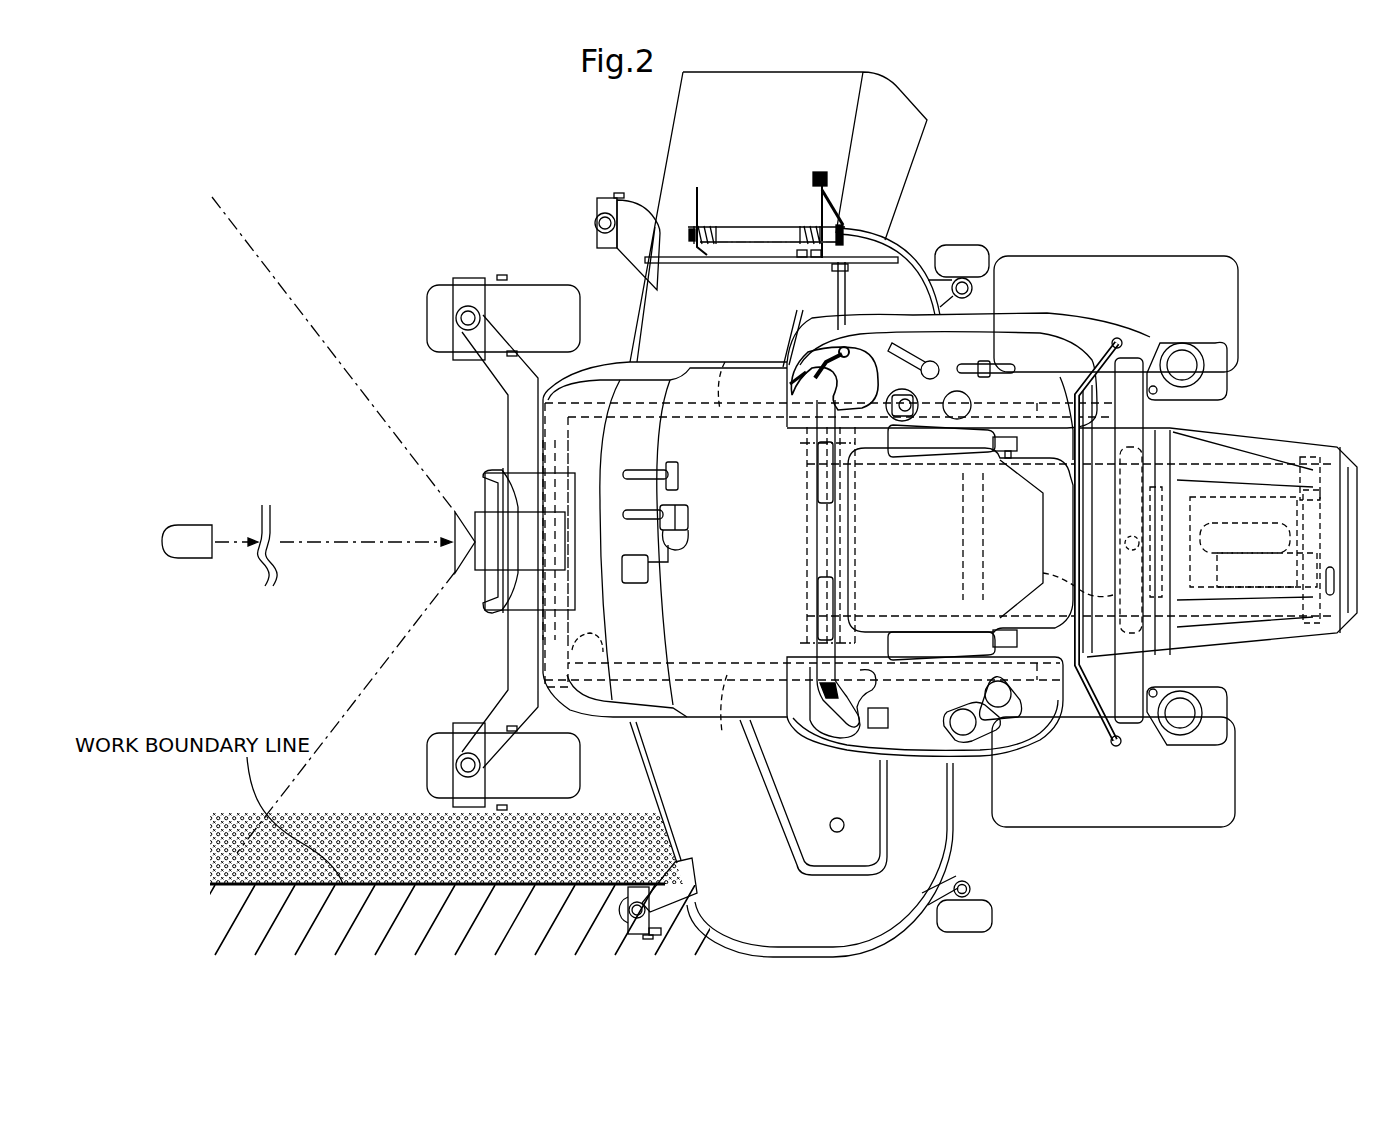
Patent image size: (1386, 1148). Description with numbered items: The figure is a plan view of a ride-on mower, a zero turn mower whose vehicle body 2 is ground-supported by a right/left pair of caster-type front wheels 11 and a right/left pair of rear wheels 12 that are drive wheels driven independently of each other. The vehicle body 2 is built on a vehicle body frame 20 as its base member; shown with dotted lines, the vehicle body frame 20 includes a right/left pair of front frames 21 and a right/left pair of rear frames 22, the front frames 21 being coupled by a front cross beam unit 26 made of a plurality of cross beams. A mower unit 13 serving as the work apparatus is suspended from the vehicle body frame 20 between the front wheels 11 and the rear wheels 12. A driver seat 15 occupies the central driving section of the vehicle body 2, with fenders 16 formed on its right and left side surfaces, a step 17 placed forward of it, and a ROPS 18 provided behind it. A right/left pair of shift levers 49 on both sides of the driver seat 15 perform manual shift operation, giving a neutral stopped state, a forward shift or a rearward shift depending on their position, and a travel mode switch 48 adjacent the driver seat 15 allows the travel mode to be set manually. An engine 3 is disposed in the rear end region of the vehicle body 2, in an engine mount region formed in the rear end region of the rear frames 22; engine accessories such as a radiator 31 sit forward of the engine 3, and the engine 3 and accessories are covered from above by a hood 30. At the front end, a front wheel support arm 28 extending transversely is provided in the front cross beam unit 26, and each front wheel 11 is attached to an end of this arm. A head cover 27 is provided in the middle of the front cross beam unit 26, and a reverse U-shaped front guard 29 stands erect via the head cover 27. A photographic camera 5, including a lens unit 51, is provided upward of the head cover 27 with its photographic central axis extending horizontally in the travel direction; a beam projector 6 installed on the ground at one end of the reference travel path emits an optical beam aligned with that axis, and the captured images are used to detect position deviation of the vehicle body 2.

The vehicle body 2 is at (750, 340).
The engine 3 is at (1280, 493).
The photographic camera 5 is at (468, 500).
The beam projector 6 is at (185, 527).
The front wheels 11 is at (435, 317).
The rear wheels 12 is at (1197, 277).
The mower unit 13 is at (638, 790).
The driver seat 15 is at (877, 523).
The fenders 16 is at (1063, 360).
The step 17 is at (635, 440).
The ROPS 18 is at (1127, 357).
The vehicle body frame 20 is at (530, 435).
The front frames 21 is at (722, 362).
The rear frames 22 is at (1238, 460).
The front cross beam unit 26 is at (604, 644).
The head cover 27 is at (527, 480).
The front wheel support arm 28 is at (517, 653).
The front guard 29 is at (490, 606).
The hood 30 is at (1287, 630).
The radiator 31 is at (1044, 580).
The travel mode switch 48 is at (889, 716).
The shift levers 49 is at (830, 483).
The lens unit 51 is at (450, 560).